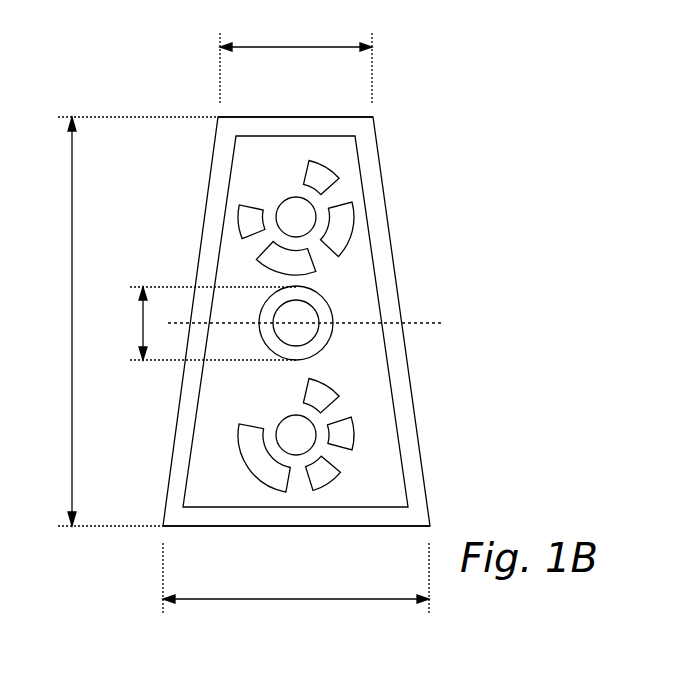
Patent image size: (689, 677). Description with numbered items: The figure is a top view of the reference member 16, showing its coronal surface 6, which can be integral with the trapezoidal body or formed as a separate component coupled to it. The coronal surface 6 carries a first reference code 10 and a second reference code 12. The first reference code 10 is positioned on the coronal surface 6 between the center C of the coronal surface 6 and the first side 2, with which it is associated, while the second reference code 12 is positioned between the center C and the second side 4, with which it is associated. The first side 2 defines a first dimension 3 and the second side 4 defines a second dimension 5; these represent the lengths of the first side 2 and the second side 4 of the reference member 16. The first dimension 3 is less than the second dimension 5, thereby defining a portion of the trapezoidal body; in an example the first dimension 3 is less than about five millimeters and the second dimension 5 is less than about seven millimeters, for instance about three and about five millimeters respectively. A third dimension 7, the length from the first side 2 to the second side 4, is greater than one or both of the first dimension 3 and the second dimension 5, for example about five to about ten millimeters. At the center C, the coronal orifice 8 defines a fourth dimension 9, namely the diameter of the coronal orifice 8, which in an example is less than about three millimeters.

The first side 2 is at (297, 117).
The first dimension 3 is at (295, 47).
The second side 4 is at (297, 527).
The second dimension 5 is at (295, 600).
The coronal surface 6 is at (215, 395).
The third dimension 7 is at (72, 320).
The coronal orifice 8 is at (303, 313).
The fourth dimension 9 is at (143, 323).
The first reference code 10 is at (343, 218).
The second reference code 12 is at (347, 436).
The reference member 16 is at (433, 135).
The center C is at (418, 324).